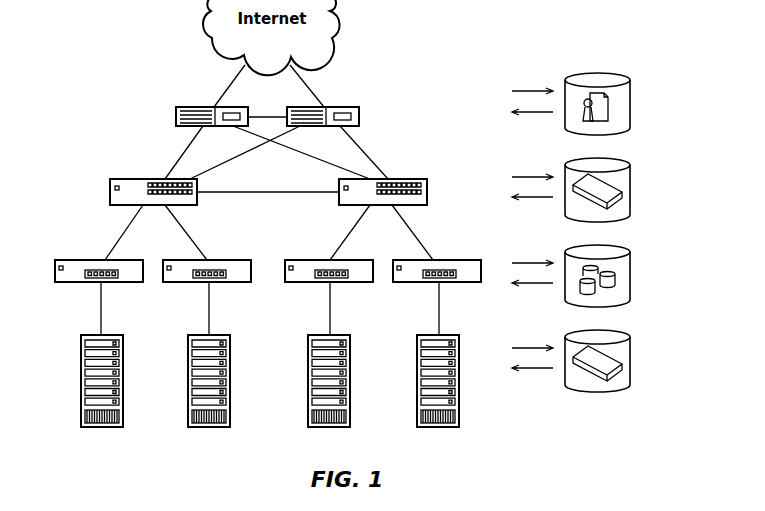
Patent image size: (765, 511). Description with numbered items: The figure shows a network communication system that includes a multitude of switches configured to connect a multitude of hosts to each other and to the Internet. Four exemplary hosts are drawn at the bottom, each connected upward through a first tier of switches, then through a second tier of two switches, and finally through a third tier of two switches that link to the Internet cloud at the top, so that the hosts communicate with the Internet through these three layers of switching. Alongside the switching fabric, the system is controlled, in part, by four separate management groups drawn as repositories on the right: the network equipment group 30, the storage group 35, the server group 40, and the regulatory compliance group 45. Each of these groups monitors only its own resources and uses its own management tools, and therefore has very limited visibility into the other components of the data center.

The network equipment group 30 is at (632, 362).
The storage group 35 is at (632, 277).
The server group 40 is at (632, 190).
The regulatory compliance group 45 is at (632, 105).